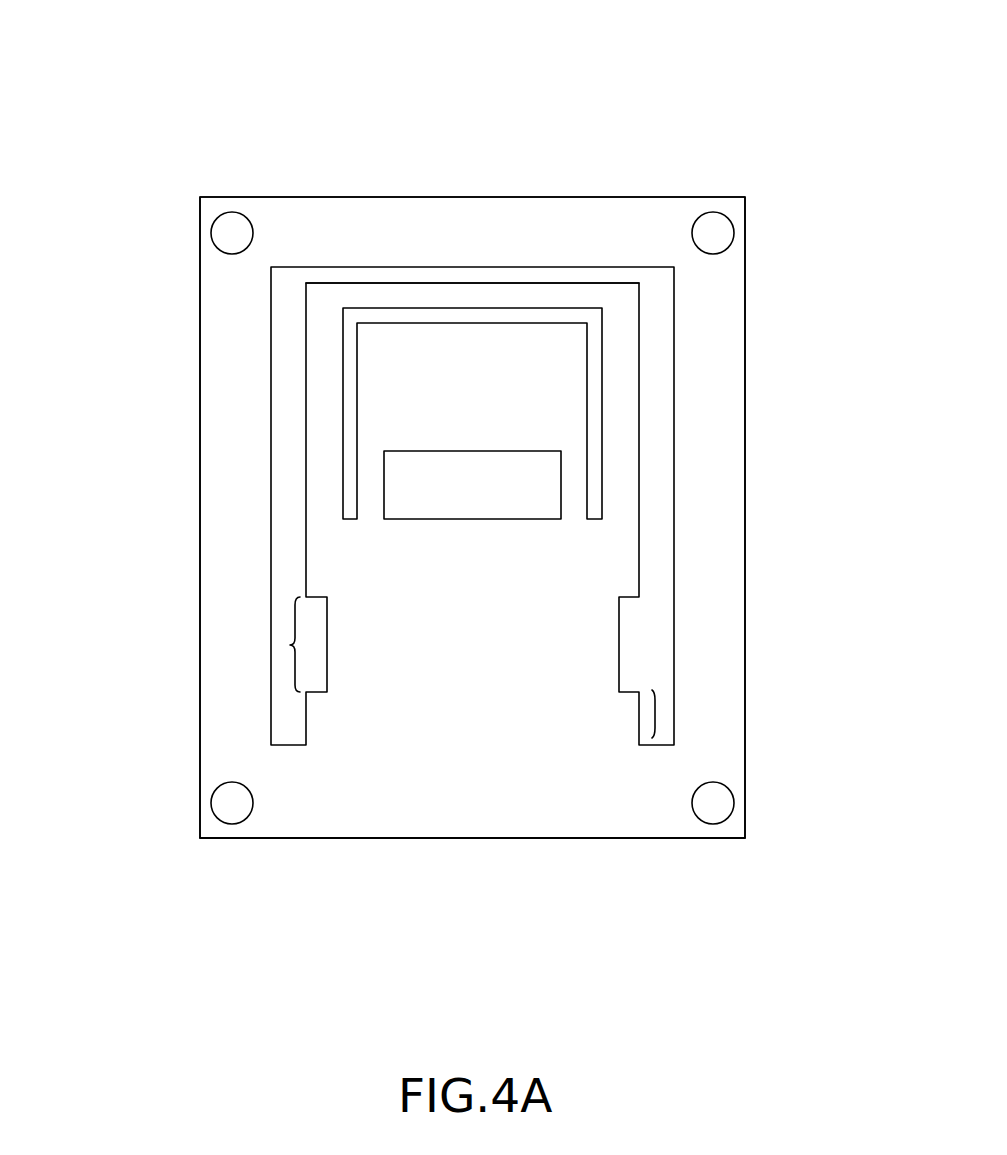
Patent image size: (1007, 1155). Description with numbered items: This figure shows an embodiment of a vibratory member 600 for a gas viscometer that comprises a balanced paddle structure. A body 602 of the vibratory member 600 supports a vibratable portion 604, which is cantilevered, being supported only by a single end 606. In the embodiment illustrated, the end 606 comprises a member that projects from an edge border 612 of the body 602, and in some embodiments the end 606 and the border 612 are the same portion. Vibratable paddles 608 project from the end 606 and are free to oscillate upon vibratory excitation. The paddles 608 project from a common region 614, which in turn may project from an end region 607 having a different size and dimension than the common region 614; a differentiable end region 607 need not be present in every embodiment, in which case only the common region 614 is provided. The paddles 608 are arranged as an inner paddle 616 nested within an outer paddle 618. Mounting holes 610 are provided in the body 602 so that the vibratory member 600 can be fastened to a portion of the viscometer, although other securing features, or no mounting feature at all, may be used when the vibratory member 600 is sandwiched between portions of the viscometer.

The vibratory member 600 is at (158, 158).
The body 602 is at (745, 673).
The vibratable portion 604 is at (586, 583).
The end 606 is at (570, 838).
The end region 607 is at (655, 714).
The vibratable paddles 608 is at (288, 485).
The mounting holes 610 is at (222, 234).
The edge border 612 is at (485, 197).
The common region 614 is at (293, 644).
The inner paddle 616 is at (573, 332).
The outer paddle 618 is at (327, 300).